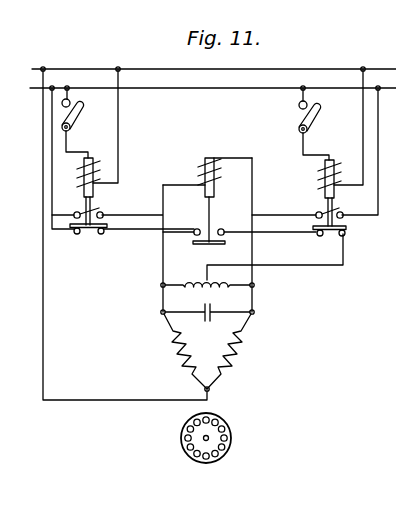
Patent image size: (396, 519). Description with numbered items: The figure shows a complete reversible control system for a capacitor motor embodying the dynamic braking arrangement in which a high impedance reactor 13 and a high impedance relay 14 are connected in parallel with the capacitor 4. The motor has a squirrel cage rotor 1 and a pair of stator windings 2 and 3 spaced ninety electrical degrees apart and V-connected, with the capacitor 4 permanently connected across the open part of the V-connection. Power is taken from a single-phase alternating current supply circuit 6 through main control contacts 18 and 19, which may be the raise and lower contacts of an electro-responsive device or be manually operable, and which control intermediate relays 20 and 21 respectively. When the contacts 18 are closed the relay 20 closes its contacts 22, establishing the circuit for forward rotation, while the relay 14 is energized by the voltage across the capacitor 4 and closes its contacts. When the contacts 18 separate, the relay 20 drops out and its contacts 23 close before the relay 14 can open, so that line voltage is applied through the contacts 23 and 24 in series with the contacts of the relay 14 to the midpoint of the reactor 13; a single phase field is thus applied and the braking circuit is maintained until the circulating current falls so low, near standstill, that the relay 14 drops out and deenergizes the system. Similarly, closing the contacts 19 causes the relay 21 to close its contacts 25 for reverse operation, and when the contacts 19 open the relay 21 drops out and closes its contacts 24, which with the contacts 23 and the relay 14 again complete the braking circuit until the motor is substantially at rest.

The rotor 1 is at (231, 432).
The stator winding 2 is at (177, 354).
The stator winding 3 is at (237, 354).
The capacitor 4 is at (207, 324).
The single-phase alternating current supply circuit 6 is at (384, 89).
The reactor 13 is at (210, 291).
The relay 14 is at (214, 192).
The main control contacts 18 is at (78, 123).
The main control contacts 19 is at (315, 126).
The intermediate relay 20 is at (89, 157).
The intermediate relay 21 is at (330, 159).
The contacts of relay 20 22 is at (101, 206).
The contacts of relay 20 23 is at (88, 231).
The contacts of relay 21 24 is at (329, 233).
The contacts of relay 21 25 is at (341, 208).